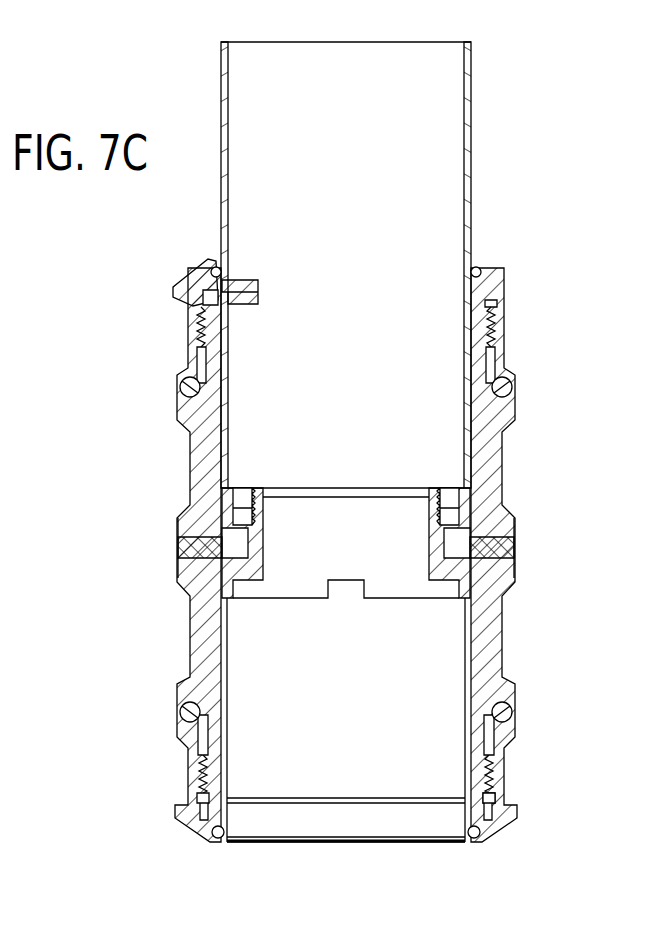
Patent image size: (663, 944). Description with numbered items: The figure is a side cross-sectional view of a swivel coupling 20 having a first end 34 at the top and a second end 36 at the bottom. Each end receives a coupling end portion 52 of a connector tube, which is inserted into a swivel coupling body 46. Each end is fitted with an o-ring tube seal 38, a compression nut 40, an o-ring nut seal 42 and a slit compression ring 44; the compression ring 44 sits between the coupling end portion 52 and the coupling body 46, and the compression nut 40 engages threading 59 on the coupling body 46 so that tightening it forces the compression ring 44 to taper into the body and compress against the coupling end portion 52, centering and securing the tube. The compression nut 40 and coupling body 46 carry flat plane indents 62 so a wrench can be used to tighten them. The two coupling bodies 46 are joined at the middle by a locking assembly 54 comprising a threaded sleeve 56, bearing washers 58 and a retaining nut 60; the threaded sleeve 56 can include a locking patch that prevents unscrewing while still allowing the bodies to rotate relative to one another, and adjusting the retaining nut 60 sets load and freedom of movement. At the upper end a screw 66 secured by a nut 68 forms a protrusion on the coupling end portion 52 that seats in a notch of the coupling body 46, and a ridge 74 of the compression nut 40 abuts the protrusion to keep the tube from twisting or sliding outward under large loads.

The swivel coupling 20 is at (190, 228).
The first end 34 is at (482, 244).
The second end 36 is at (210, 843).
The o-ring tube seal 38 is at (485, 268).
The compression nut 40 is at (197, 375).
The o-ring nut seal 42 is at (182, 388).
The slit compression ring 44 is at (505, 297).
The swivel coupling body 46 is at (177, 578).
The coupling end portion 52 is at (221, 82).
The locking assembly 54 is at (580, 502).
The threaded sleeve 56 is at (455, 590).
The bearing washers 58 is at (478, 566).
The threading 59 is at (498, 328).
The retaining nut 60 is at (478, 522).
The flat plane indents 62 is at (190, 345).
The screw 66 is at (200, 316).
The nut 68 is at (244, 280).
The ridge 74 is at (205, 283).